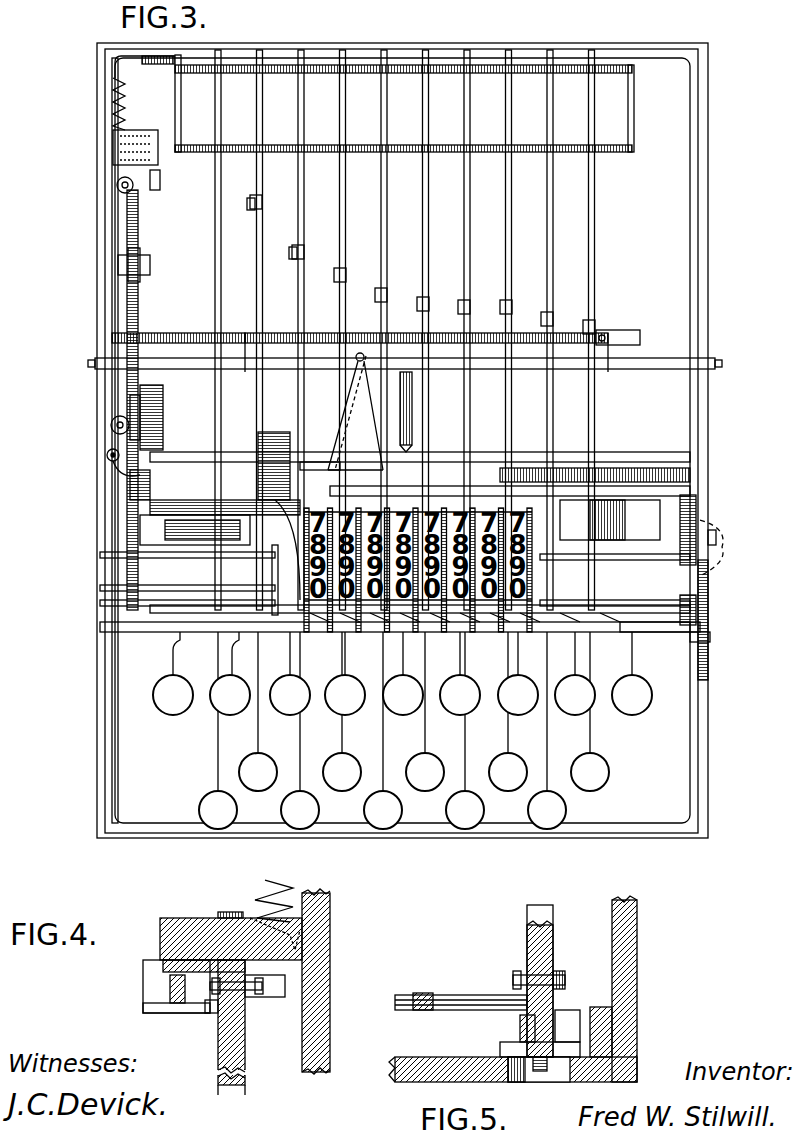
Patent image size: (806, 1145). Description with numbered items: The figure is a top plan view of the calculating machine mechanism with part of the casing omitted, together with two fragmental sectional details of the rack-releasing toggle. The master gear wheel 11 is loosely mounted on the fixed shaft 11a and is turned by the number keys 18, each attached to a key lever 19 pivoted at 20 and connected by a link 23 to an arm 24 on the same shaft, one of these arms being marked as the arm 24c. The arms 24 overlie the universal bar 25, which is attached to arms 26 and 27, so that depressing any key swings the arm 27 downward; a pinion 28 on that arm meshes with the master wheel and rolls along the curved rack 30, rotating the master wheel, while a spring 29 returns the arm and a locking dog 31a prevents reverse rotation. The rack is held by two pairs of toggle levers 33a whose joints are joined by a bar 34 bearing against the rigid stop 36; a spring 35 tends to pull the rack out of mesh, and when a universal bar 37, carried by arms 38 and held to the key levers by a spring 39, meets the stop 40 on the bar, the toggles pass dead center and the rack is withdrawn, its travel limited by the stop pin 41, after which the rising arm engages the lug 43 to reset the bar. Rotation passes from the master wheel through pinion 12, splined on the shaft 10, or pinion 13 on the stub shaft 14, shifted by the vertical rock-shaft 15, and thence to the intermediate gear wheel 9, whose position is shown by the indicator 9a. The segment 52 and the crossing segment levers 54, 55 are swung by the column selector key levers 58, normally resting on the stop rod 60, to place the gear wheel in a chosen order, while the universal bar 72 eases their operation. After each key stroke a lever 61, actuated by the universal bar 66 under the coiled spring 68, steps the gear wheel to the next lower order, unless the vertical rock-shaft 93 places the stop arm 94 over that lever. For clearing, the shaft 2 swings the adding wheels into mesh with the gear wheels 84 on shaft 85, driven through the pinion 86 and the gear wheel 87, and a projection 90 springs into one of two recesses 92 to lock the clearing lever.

In FIG. 3, the shaft 2 is at (703, 610).
In FIG. 3, the intermediate gear wheel 9 is at (275, 430).
In FIG. 3, the indicator 9a is at (290, 560).
In FIG. 3, the shaft 10 is at (665, 482).
In FIG. 3, the master gear wheel 11 is at (115, 226).
In FIG. 3, the fixed shaft 11a is at (652, 358).
In FIG. 3, the pinion 12 is at (130, 500).
In FIG. 3, the pinion 13 is at (150, 400).
In FIG. 3, the stub shaft 14 is at (120, 420).
In FIG. 3, the vertical rock-shaft 15 is at (108, 455).
In FIG. 3, the number keys 18 is at (465, 830).
In FIG. 3, the key lever 19 is at (343, 188).
In FIG. 3, the pivot 20 is at (489, 64).
In FIG. 3, the link 23 is at (292, 252).
In FIG. 3, the arm 24 is at (295, 304).
In FIG. 3, the cross bar arm 24c is at (575, 330).
In FIG. 3, the universal bar 25 is at (165, 330).
In FIG. 3, the arm 26 is at (615, 330).
In FIG. 3, the arm 27 is at (148, 226).
In FIG. 4, the arm 27 is at (175, 985).
In FIG. 3, the pinion 28 is at (140, 186).
In FIG. 4, the pinion 28 is at (215, 1025).
In FIG. 4, the spring 29 is at (272, 880).
In FIG. 4, the rack 30 is at (225, 1085).
In FIG. 3, the locking dog 31a is at (125, 340).
In FIG. 4, the toggle levers 33a is at (212, 993).
In FIG. 5, the toggle levers 33a is at (522, 973).
In FIG. 4, the bar 34 is at (245, 1060).
In FIG. 5, the bar 34 is at (540, 912).
In FIG. 3, the spring 35 is at (112, 98).
In FIG. 4, the rigid stop 36 is at (194, 918).
In FIG. 3, the universal bar 37 is at (353, 148).
In FIG. 5, the universal bar 37 is at (453, 995).
In FIG. 3, the arms 38 is at (178, 115).
In FIG. 5, the arms 38 is at (418, 992).
In FIG. 3, the spring 39 is at (170, 86).
In FIG. 5, the stop 40 is at (535, 1015).
In FIG. 3, the stop pin 41 is at (120, 270).
In FIG. 4, the lug 43 is at (163, 966).
In FIG. 3, the segment 52 is at (170, 540).
In FIG. 3, the segment lever 54 is at (620, 535).
In FIG. 3, the segment lever 55 is at (185, 530).
In FIG. 3, the column selector key levers 58 is at (232, 658).
In FIG. 3, the stop rod 60 is at (655, 640).
In FIG. 3, the lever 61 is at (330, 455).
In FIG. 3, the universal bar 66 is at (600, 455).
In FIG. 3, the coiled spring 68 is at (413, 402).
In FIG. 3, the universal bar 72 is at (405, 520).
In FIG. 3, the gear wheels 84 is at (345, 640).
In FIG. 3, the shaft 85 is at (150, 600).
In FIG. 3, the pinion 86 is at (708, 640).
In FIG. 3, the gear wheel 87 is at (690, 605).
In FIG. 3, the projection 90 is at (697, 515).
In FIG. 3, the recesses 92 is at (722, 547).
In FIG. 3, the vertical rock-shaft 93 is at (365, 350).
In FIG. 3, the stop arm 94 is at (400, 470).